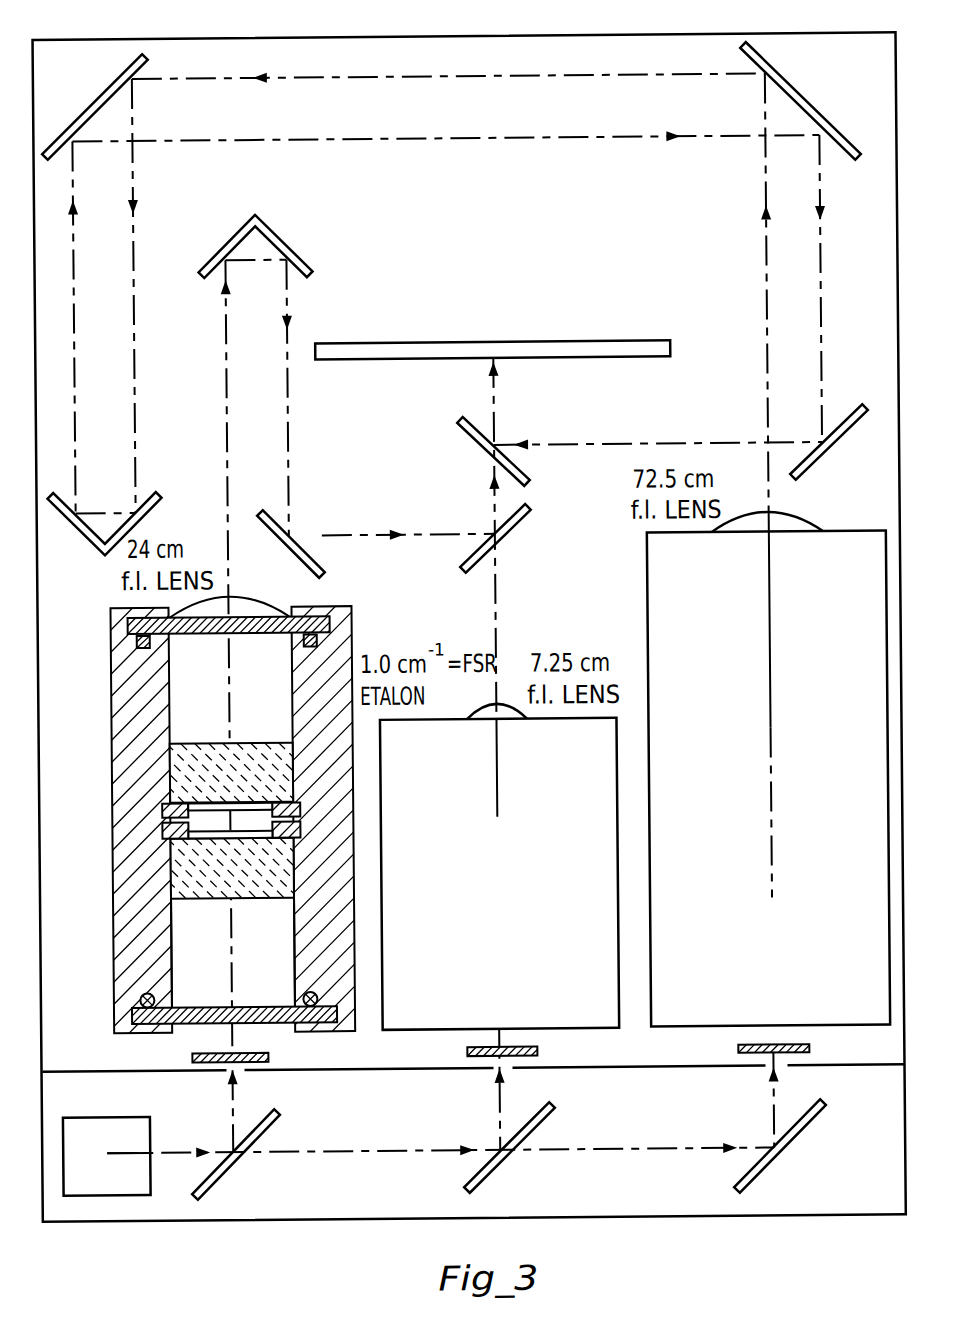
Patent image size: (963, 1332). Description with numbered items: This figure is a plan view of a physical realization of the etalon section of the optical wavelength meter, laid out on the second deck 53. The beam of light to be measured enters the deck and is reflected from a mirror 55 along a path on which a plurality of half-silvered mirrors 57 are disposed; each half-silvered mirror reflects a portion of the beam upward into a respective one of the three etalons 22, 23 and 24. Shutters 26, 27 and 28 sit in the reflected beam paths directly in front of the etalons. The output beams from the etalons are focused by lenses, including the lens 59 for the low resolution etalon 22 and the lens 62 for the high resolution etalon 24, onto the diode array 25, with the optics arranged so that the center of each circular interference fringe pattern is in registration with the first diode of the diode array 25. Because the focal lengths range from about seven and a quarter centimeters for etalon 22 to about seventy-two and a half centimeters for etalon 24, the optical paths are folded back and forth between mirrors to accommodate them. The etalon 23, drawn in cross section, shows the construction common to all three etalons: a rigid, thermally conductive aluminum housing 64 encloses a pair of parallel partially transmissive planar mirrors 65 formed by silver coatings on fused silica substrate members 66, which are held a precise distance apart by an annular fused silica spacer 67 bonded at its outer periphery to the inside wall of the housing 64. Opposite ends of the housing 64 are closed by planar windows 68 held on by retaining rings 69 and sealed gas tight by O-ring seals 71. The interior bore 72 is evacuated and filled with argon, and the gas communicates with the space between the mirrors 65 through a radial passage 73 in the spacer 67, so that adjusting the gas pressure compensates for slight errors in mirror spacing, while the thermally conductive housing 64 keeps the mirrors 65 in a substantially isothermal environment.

The second deck 53 is at (533, 32).
The diode array 25 is at (630, 342).
The lens 62 is at (801, 534).
The retaining rings 69 is at (317, 604).
The O-ring seals 71 is at (137, 637).
The planar windows 68 is at (278, 631).
The housing 64 is at (127, 710).
The fused silica cylindrical substrate members 66 is at (185, 743).
The radial passage 73 is at (160, 804).
The annular fused silica spacer 67 is at (160, 826).
The partially transmissive planar mirrors 65 is at (217, 826).
The etalon 23 is at (223, 828).
The interior bore 72 is at (293, 965).
The shutter 27 is at (243, 1050).
The shutter 26 is at (527, 1048).
The shutter 28 is at (798, 1048).
The mirror 55 is at (90, 1114).
The half-silvered mirrors 57 is at (221, 1158).
The lens 59 is at (468, 717).
The etalon 22 is at (552, 776).
The etalon 24 is at (741, 720).